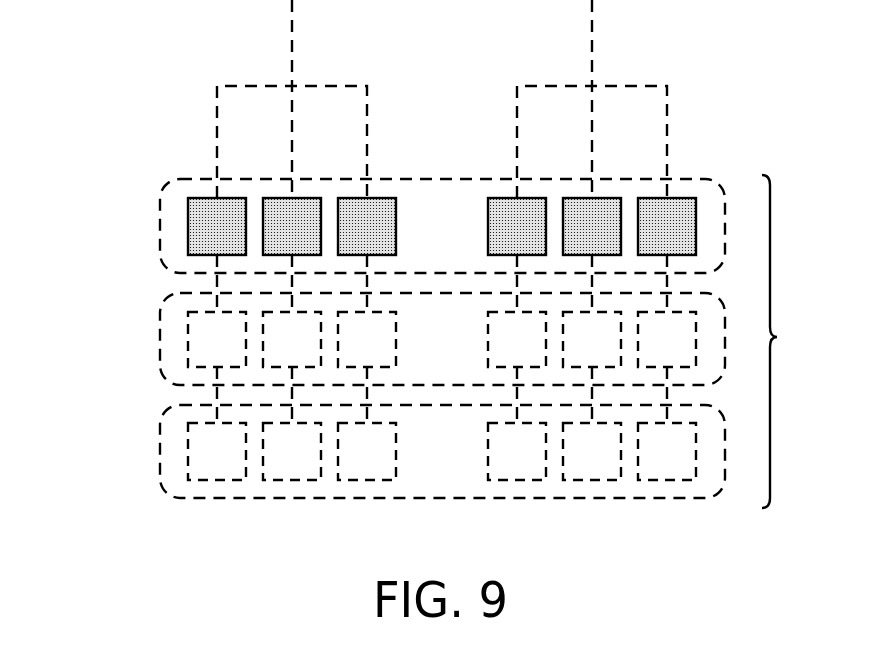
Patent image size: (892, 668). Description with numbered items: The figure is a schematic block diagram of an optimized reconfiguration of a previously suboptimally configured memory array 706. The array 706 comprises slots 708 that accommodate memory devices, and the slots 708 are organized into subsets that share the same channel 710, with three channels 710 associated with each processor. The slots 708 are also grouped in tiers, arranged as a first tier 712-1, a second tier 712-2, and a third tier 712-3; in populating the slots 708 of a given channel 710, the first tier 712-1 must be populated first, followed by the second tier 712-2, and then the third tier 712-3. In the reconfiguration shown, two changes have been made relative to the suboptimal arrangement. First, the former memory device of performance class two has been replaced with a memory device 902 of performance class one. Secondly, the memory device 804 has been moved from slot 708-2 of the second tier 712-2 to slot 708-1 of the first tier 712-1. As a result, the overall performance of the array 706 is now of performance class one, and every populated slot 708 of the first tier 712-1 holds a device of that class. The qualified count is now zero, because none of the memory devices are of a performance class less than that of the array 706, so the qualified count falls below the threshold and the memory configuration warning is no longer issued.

The array 706 is at (450, 317).
The slots 708 is at (397, 206).
The slot of the first tier 708-1 is at (167, 208).
The slot of the second tier 708-2 is at (278, 367).
The channel 710 is at (367, 126).
The first tier 712-1 is at (407, 204).
The second tier 712-2 is at (396, 354).
The third tier 712-3 is at (397, 498).
The memory device 804 is at (203, 218).
The memory device 902 is at (527, 210).